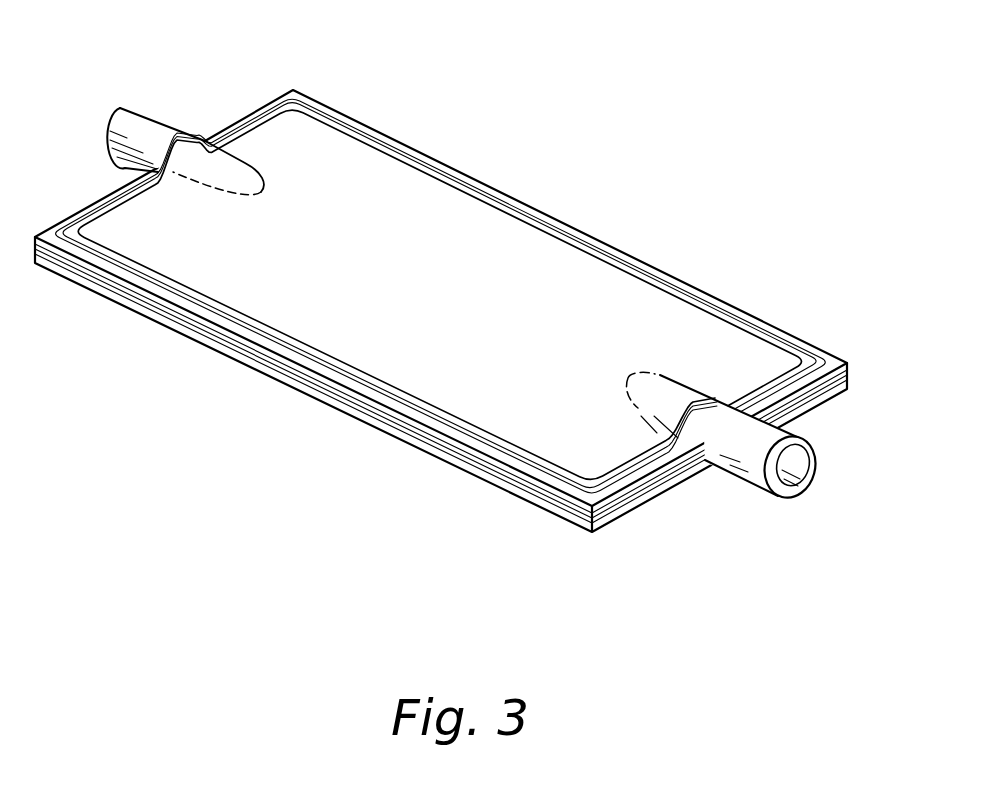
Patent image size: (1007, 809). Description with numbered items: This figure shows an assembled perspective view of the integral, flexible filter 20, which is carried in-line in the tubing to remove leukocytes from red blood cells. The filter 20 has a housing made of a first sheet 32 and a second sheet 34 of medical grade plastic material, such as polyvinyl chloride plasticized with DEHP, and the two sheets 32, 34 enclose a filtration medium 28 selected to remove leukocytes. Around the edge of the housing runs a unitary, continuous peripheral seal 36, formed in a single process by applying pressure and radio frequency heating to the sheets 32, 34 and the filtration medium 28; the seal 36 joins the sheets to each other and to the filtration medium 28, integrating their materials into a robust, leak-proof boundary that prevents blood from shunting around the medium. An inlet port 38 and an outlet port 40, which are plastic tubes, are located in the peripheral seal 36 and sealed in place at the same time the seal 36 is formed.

The integral flexible filter 20 is at (469, 321).
The filtration medium 28 is at (563, 510).
The first sheet 32 is at (408, 263).
The second sheet 34 is at (400, 438).
The peripheral seal 36 is at (380, 140).
The inlet port 38 is at (765, 443).
The outlet port 40 is at (143, 135).